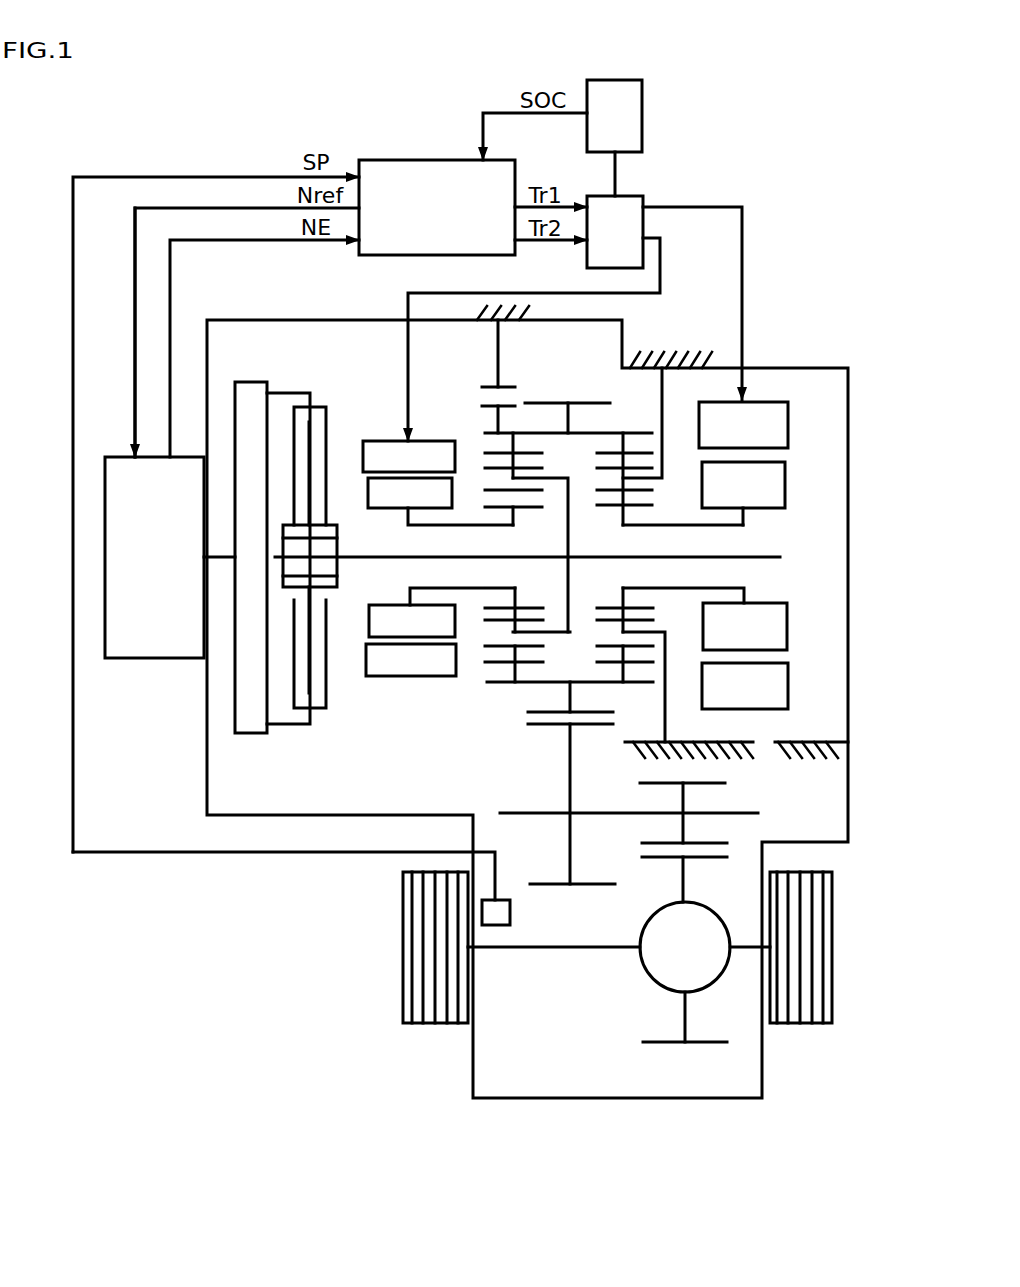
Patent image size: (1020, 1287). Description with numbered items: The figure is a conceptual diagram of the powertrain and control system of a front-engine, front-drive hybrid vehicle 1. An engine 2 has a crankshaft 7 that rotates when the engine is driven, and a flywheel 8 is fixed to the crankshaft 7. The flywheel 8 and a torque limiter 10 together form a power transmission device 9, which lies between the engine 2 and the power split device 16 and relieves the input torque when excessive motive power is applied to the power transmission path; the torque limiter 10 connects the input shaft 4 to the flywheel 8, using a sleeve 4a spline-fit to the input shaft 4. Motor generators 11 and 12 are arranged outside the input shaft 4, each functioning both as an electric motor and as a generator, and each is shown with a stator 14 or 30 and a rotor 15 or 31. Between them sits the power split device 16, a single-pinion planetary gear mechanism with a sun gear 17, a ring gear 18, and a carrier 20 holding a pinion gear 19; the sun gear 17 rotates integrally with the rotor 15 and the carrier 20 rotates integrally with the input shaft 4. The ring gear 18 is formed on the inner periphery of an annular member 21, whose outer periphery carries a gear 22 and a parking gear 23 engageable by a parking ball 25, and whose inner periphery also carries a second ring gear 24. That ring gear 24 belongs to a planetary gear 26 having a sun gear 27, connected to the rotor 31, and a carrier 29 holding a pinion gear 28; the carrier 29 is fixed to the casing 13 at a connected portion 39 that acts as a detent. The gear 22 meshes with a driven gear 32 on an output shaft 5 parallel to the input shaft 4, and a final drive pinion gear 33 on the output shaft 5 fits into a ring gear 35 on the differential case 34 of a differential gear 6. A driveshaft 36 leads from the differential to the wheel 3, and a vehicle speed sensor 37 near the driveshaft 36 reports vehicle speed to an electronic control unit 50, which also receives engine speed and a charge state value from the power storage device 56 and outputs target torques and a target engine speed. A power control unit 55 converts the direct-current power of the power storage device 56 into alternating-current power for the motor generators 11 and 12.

The hybrid vehicle 1 is at (786, 73).
The engine 2 is at (155, 660).
The wheel 3 is at (437, 1026).
The input shaft 4 is at (424, 556).
The sleeve 4a is at (338, 587).
The output shaft 5 is at (538, 812).
The differential gear 6 is at (673, 995).
The crankshaft 7 is at (222, 555).
The flywheel 8 is at (250, 736).
The power transmission device 9 is at (288, 731).
The torque limiter 10 is at (334, 681).
The motor generator 11 is at (426, 597).
The motor generator 12 is at (729, 589).
The casing 13 is at (680, 358).
The stator 14 is at (396, 678).
The rotor 15 is at (395, 509).
The power split device 16 is at (573, 653).
The sun gear 17 is at (530, 605).
The ring gear 18 is at (535, 661).
The pinion gear 19 is at (496, 621).
The carrier 20 is at (567, 548).
The annular member 21 is at (508, 684).
The gear 22 is at (586, 400).
The parking gear 23 is at (484, 408).
The ring gear 24 is at (597, 460).
The parking ball 25 is at (500, 341).
The planetary gear 26 is at (590, 469).
The sun gear 27 is at (603, 605).
The pinion gear 28 is at (653, 624).
The carrier 29 is at (665, 700).
The stator 30 is at (788, 688).
The rotor 31 is at (788, 627).
The driven gear 32 is at (555, 886).
The final drive pinion gear 33 is at (652, 782).
The differential case 34 is at (647, 918).
The ring gear 35 is at (668, 1044).
The driveshaft 36 is at (744, 945).
The vehicle speed sensor 37 is at (505, 898).
The connected portion 39 is at (655, 372).
The electronic control unit 50 is at (393, 160).
The power control unit 55 is at (643, 228).
The power storage device 56 is at (642, 105).